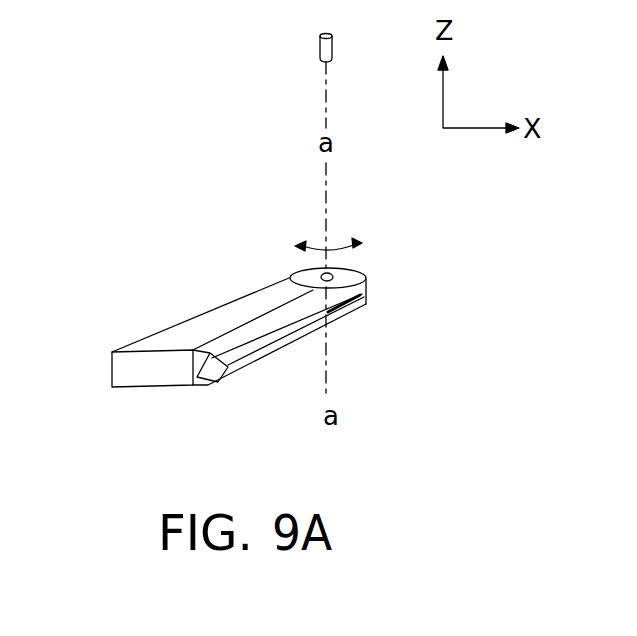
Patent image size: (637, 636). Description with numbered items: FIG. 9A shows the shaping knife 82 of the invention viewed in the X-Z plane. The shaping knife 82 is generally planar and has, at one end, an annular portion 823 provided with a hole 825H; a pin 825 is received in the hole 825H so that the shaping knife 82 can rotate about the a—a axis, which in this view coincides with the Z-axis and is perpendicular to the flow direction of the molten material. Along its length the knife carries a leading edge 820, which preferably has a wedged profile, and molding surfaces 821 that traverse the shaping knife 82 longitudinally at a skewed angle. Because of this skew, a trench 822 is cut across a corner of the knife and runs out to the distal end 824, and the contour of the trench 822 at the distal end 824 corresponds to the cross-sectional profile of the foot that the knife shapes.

The shaping knife 82 is at (174, 323).
The leading edge 820 is at (362, 291).
The molding surfaces 821 is at (300, 312).
The trench 822 is at (200, 366).
The annular portion 823 is at (355, 270).
The distal end 824 is at (130, 372).
The pin 825 is at (318, 43).
The hole 825H is at (322, 273).